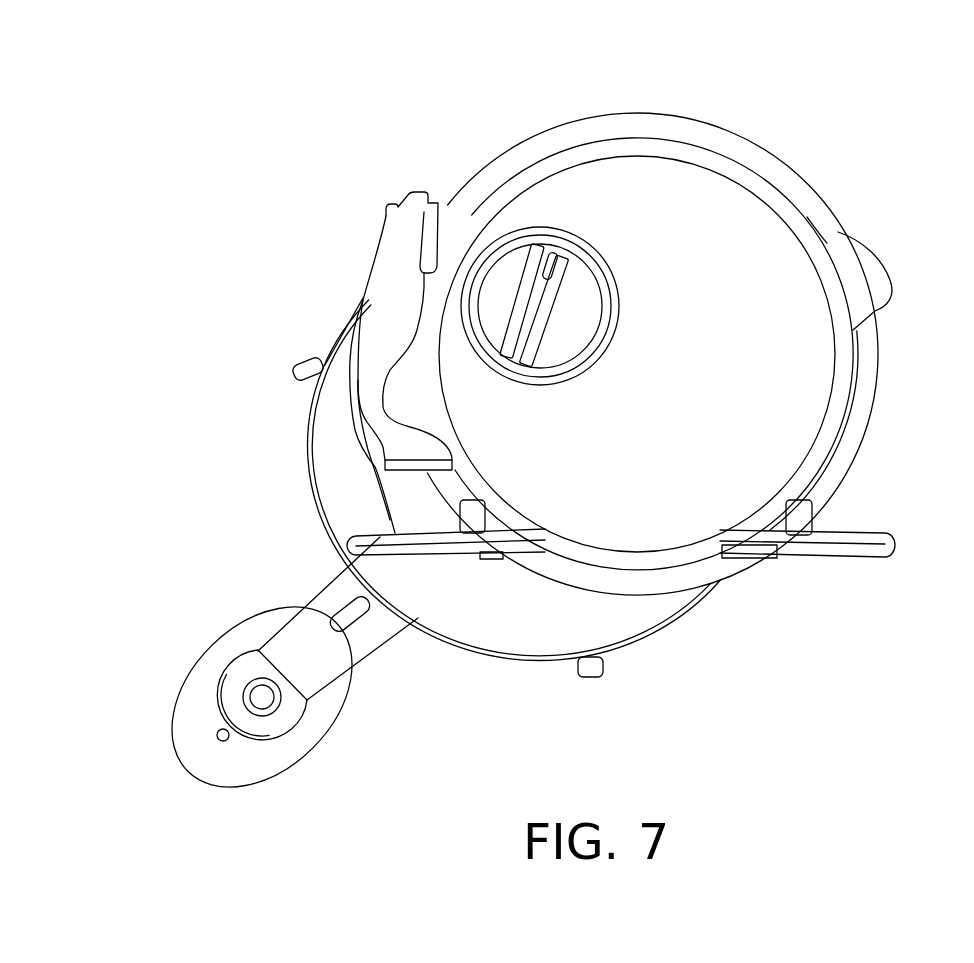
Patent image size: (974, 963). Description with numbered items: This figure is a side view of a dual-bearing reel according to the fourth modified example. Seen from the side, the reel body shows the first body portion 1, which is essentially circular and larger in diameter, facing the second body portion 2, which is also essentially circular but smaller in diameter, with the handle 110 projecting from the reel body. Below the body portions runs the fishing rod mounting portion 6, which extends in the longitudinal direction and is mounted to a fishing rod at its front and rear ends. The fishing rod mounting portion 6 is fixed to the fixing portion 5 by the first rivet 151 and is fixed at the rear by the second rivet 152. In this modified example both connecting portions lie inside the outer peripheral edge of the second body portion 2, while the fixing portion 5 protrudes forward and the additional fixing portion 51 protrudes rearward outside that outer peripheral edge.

The first body portion 1 is at (712, 122).
The second body portion 2 is at (778, 200).
The handle 110 is at (303, 590).
The fishing rod mounting portion 6 is at (410, 553).
The fixing portion 5 is at (472, 517).
The first rivet 151 is at (490, 556).
The second rivet 152 is at (738, 558).
The fixing portion 51 is at (798, 520).